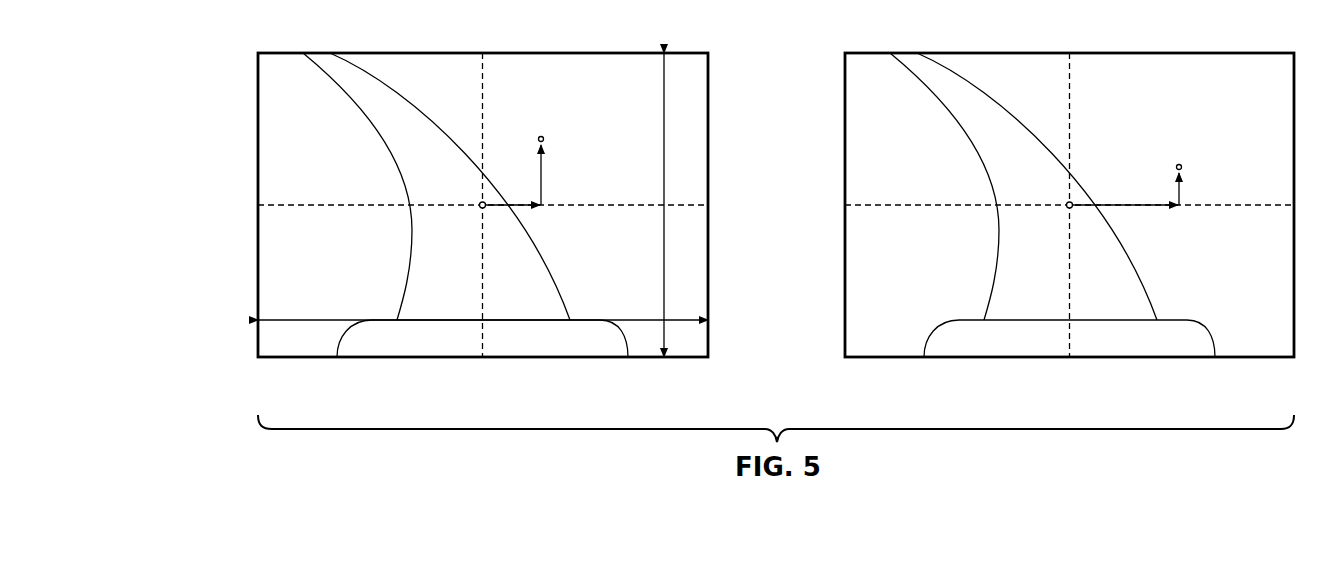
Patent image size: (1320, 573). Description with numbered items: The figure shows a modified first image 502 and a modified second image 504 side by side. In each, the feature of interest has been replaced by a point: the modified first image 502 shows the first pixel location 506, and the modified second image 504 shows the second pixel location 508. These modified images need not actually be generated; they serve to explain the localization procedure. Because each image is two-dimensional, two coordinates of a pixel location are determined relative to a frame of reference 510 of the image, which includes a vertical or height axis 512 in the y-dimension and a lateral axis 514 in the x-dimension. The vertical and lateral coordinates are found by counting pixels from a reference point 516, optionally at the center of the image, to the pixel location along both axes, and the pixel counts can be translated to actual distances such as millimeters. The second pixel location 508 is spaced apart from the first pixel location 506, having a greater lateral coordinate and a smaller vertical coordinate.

The modified first image 502 is at (281, 53).
The modified second image 504 is at (868, 53).
The first pixel location 506 is at (538, 139).
The second pixel location 508 is at (1176, 167).
The frame of reference 510 is at (664, 280).
The vertical axis 512 is at (664, 147).
The lateral axis 514 is at (653, 320).
The reference point 516 is at (480, 207).